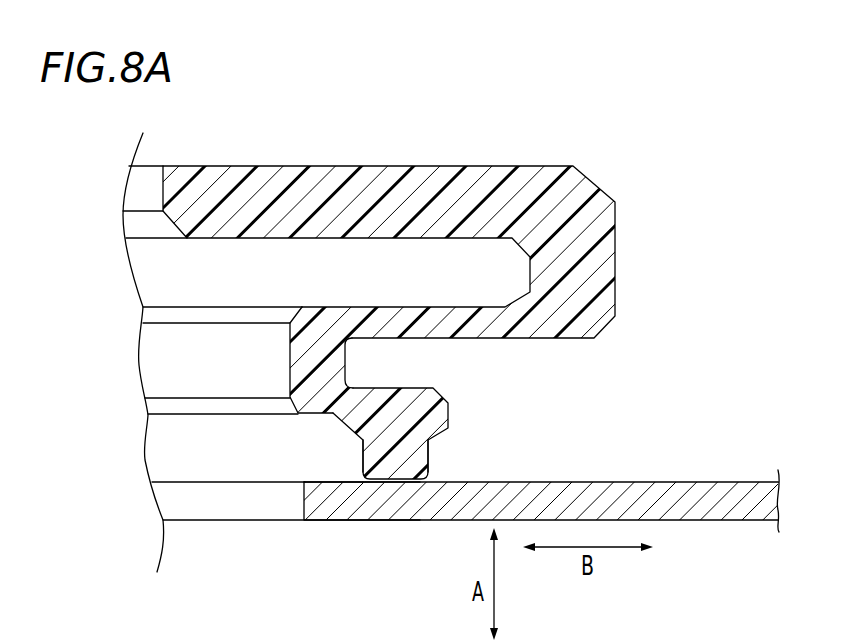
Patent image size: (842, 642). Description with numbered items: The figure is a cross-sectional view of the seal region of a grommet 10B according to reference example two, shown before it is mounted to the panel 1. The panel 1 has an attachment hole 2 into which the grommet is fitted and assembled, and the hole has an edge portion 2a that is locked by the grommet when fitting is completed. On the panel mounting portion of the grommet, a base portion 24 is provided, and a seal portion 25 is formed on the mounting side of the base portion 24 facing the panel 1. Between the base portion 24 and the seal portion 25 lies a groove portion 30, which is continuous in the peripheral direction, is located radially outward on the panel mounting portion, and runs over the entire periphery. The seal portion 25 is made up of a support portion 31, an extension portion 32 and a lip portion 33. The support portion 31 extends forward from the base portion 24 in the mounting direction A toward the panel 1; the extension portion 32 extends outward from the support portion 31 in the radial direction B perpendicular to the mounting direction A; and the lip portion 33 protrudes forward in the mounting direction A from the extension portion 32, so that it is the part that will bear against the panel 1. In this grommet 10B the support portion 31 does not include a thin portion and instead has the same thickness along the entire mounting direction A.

The grommet 10B is at (635, 170).
The base portion 24 is at (615, 310).
The seal portion 25 is at (468, 410).
The groove portion 30 is at (389, 376).
The support portion 31 is at (297, 358).
The extension portion 32 is at (330, 418).
The lip portion 33 is at (402, 473).
The panel 1 is at (707, 474).
The attachment hole 2 is at (177, 529).
The edge portion 2a is at (303, 500).